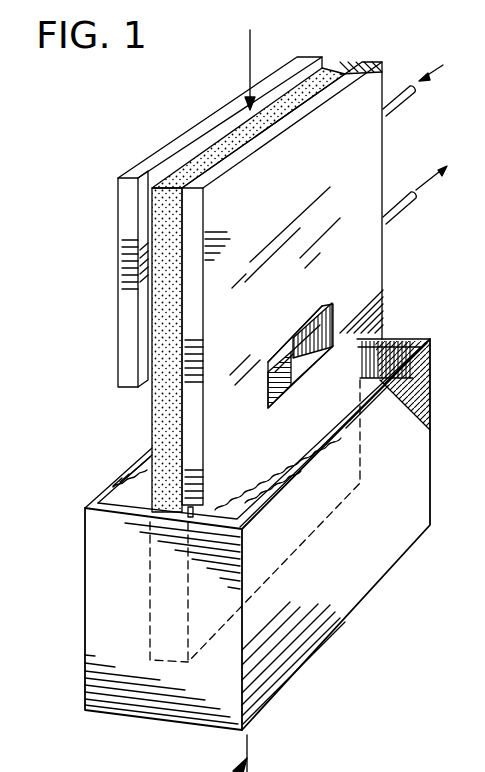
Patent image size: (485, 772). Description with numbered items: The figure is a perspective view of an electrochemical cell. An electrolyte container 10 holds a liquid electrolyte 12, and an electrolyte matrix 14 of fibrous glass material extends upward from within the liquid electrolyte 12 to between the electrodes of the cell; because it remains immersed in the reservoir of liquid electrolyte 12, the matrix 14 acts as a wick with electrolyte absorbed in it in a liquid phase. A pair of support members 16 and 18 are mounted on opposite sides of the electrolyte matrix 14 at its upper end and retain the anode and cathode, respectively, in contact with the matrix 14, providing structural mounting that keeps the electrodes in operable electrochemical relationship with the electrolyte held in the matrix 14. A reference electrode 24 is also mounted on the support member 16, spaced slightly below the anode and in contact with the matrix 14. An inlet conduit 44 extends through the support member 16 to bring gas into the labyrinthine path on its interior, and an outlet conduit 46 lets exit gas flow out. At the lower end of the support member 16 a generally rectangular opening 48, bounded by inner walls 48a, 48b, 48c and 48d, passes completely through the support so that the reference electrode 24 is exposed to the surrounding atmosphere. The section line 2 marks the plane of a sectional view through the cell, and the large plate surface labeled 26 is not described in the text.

The section line 2 is at (244, 50).
The electrolyte container 10 is at (95, 597).
The liquid electrolyte 12 is at (262, 488).
The electrolyte matrix 14 is at (155, 418).
The support member 16 is at (383, 62).
The support member 18 is at (300, 55).
The reference electrode 24 is at (337, 331).
The plate 26 is at (362, 165).
The inlet conduit 44 is at (410, 92).
The outlet conduit 46 is at (407, 203).
The rectangular opening 48 is at (282, 339).
The inner wall 48a is at (293, 340).
The inner wall 48b is at (268, 375).
The inner wall 48c is at (307, 365).
The inner wall 48d is at (330, 303).